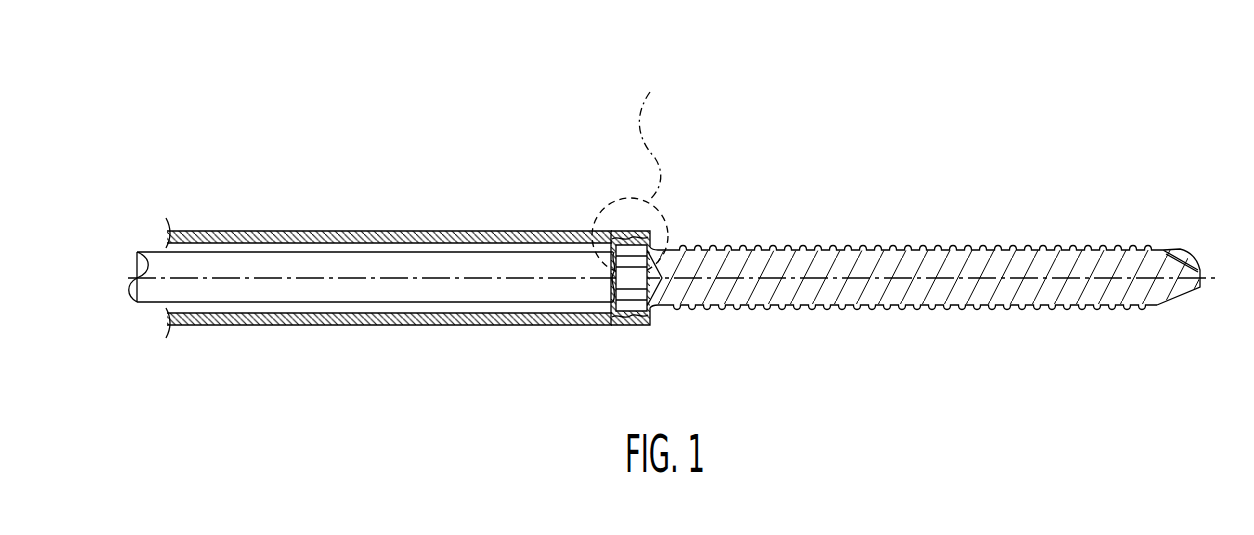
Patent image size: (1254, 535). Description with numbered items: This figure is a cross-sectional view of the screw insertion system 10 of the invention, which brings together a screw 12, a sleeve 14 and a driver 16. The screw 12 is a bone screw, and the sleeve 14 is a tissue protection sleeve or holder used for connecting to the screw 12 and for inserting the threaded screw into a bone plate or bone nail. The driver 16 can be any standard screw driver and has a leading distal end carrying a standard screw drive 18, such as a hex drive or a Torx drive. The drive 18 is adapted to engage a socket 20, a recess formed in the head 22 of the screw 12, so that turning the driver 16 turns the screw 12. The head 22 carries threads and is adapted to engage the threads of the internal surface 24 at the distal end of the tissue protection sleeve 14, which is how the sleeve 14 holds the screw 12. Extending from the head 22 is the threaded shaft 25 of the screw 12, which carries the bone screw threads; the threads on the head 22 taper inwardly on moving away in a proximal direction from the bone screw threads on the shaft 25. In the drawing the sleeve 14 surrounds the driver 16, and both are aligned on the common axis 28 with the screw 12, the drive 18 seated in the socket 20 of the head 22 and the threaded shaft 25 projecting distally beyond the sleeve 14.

The screw insertion system 10 is at (677, 200).
The screw 12 is at (925, 275).
The sleeve 14 is at (317, 230).
The driver 16 is at (348, 293).
The screw drive 18 is at (632, 268).
The socket 20 is at (656, 244).
The head 22 is at (633, 315).
The internal surface 24 is at (591, 233).
The threaded shaft 25 is at (883, 285).
The longitudinal axis 28 is at (252, 278).